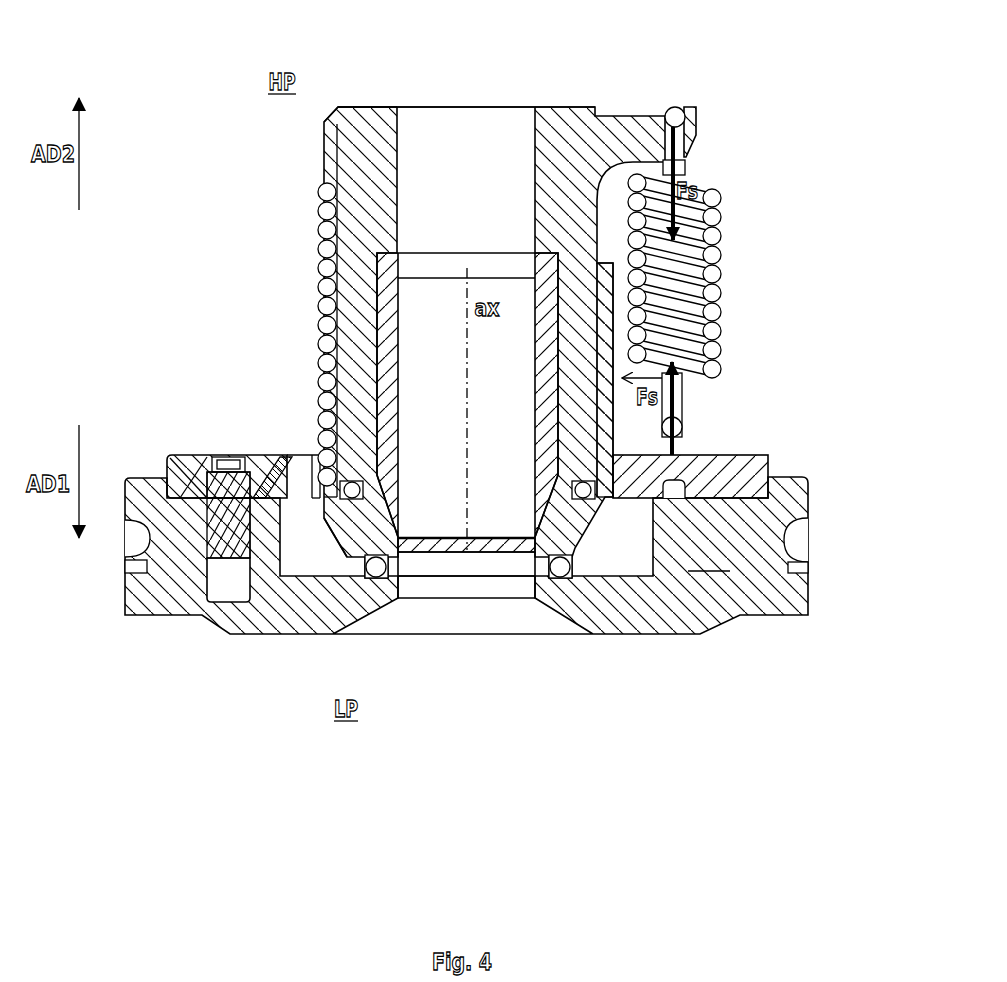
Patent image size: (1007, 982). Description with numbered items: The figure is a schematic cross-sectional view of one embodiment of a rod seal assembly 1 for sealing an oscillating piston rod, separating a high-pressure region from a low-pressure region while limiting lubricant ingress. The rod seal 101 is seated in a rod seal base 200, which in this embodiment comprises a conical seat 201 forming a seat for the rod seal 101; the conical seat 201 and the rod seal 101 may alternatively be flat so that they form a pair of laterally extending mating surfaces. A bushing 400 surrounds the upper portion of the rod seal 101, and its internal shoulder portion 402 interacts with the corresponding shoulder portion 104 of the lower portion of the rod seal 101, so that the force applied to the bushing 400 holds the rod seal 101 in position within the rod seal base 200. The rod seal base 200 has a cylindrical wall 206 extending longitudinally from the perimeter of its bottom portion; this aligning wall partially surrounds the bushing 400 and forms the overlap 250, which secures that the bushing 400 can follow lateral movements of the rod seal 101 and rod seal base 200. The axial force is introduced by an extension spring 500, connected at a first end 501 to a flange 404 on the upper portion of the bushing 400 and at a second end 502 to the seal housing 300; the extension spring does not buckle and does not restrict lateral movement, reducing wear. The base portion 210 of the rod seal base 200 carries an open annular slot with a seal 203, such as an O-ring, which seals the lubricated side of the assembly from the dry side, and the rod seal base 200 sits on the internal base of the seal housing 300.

The rod seal assembly 1 is at (398, 73).
The rod seal 101 is at (322, 310).
The shoulder portion 104 is at (565, 440).
The rod seal base 200 is at (322, 407).
The conical seat 201 is at (330, 543).
The seal 203 is at (373, 577).
The cylindrical wall 206 is at (330, 368).
The base portion 210 is at (282, 500).
The overlap 250 is at (705, 362).
The seal housing 300 is at (466, 555).
The bushing 400 is at (323, 162).
The internal shoulder portion 402 is at (680, 393).
The flange 404 is at (688, 147).
The spring 500 is at (317, 208).
The first end 501 is at (685, 117).
The second end 502 is at (735, 455).